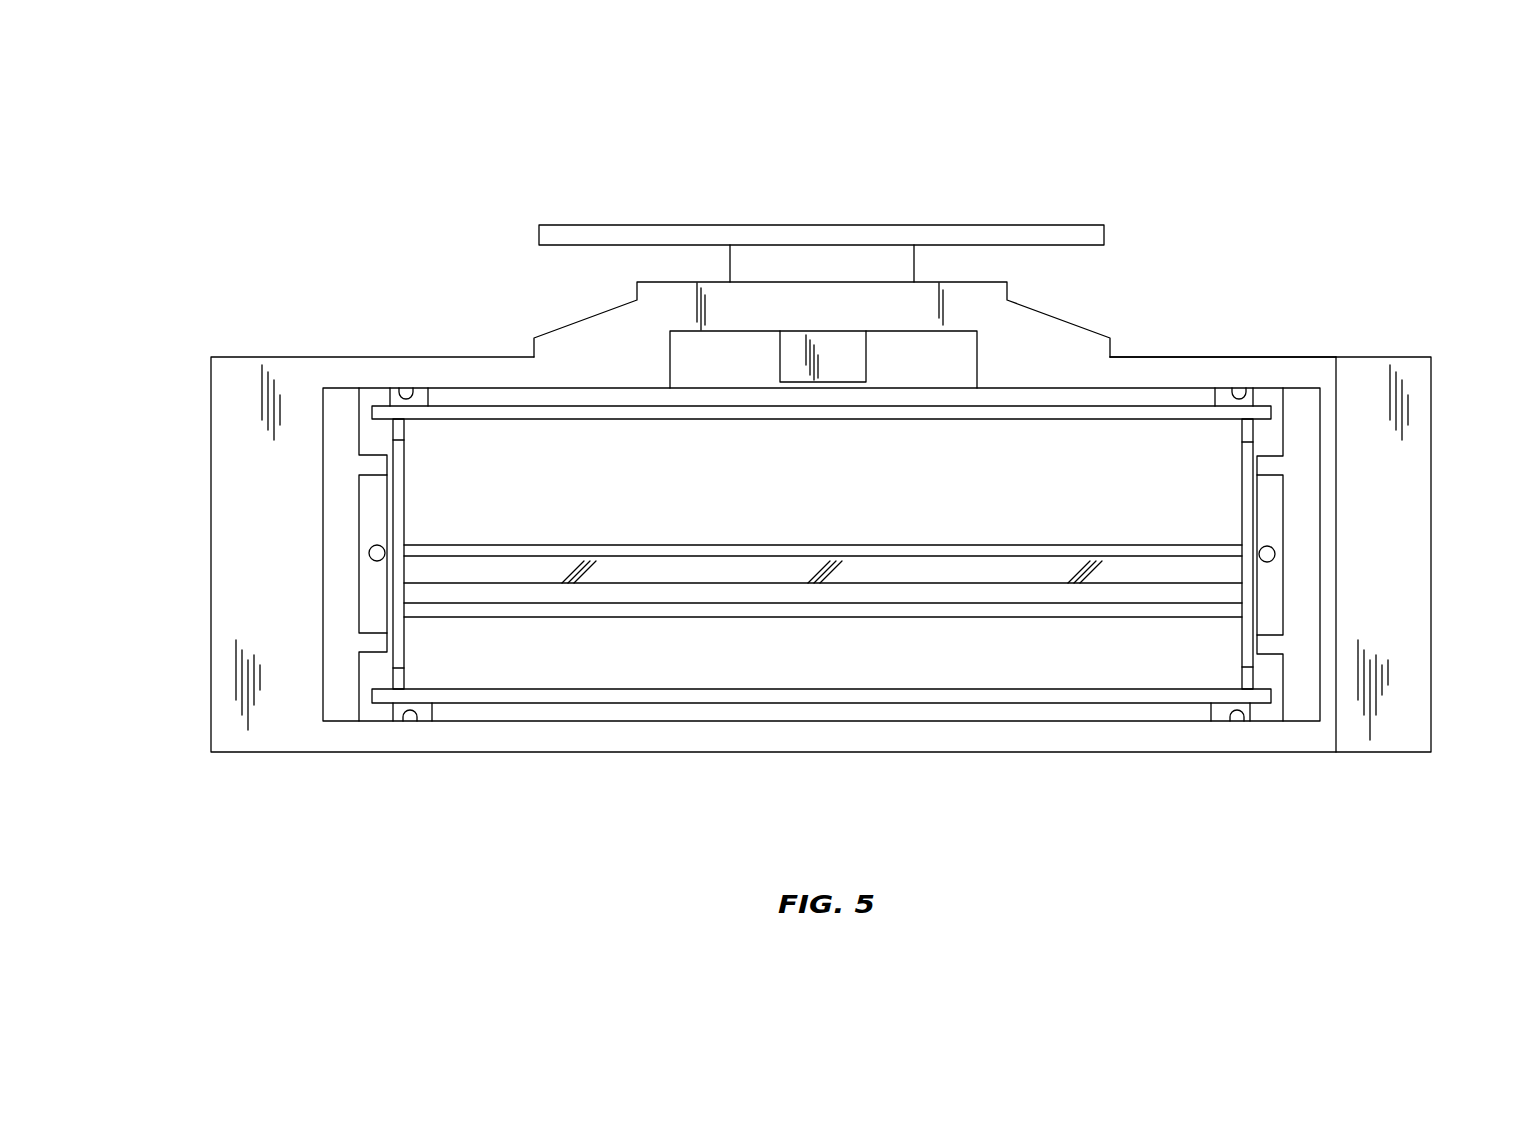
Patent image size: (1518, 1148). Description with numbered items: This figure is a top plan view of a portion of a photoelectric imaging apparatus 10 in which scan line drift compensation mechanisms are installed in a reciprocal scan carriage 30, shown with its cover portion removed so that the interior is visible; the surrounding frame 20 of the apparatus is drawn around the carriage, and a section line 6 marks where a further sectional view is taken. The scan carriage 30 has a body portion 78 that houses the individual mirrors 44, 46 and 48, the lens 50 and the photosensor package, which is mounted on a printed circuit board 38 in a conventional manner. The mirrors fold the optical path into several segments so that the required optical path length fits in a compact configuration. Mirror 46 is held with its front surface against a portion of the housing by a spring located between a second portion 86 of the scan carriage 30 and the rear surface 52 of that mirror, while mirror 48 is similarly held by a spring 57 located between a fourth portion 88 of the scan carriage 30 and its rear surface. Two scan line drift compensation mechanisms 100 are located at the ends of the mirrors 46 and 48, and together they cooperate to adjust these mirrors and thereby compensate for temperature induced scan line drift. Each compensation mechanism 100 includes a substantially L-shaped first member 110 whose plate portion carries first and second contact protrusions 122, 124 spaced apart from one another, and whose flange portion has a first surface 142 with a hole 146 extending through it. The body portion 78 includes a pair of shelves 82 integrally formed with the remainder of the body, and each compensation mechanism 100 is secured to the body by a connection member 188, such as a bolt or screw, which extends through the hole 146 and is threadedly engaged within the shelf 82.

The chuck assembly 10 is at (388, 178).
The frame 20 is at (242, 372).
The scan carriage 30 is at (1232, 254).
The printed circuit board 38 is at (1056, 228).
The mirror 44 is at (880, 560).
The mirror 46 is at (612, 412).
The mirror 48 is at (612, 692).
The lens 50 is at (858, 362).
The rear surface of the mirror 46 52 is at (420, 395).
The spring 57 is at (424, 715).
The body portion 78 is at (1145, 357).
The shelf 82 is at (337, 464).
The second portion of the scan carriage 86 is at (402, 393).
The fourth portion of the scan carriage 88 is at (404, 722).
The scan line drift compensation mechanism 100 is at (415, 507).
The first member 110 is at (405, 632).
The first contact protrusion 122 is at (410, 436).
The second contact protrusion 124 is at (405, 680).
The first surface 142 is at (370, 508).
The hole 146 is at (377, 563).
The connection member 188 is at (369, 553).
The section line 6- 6 is at (768, 190).